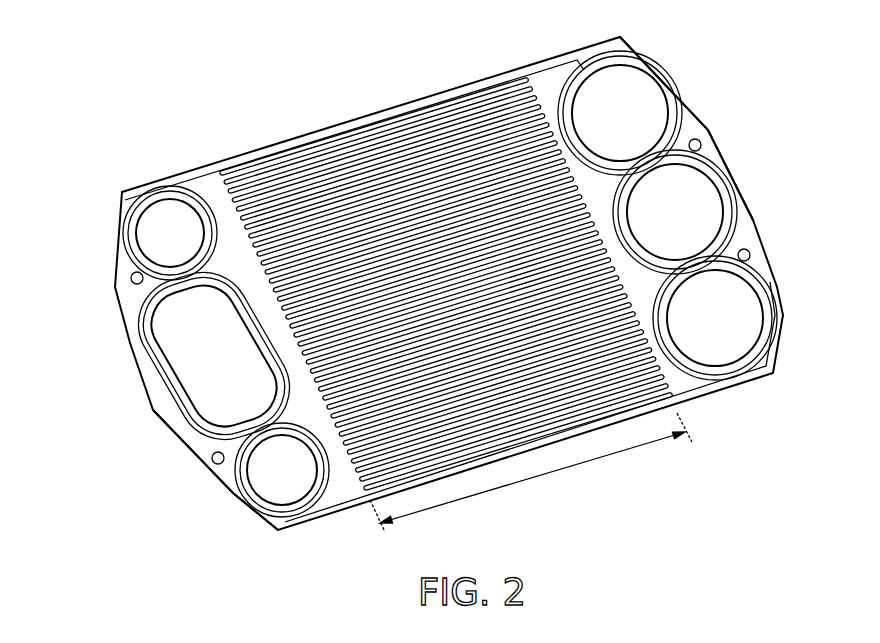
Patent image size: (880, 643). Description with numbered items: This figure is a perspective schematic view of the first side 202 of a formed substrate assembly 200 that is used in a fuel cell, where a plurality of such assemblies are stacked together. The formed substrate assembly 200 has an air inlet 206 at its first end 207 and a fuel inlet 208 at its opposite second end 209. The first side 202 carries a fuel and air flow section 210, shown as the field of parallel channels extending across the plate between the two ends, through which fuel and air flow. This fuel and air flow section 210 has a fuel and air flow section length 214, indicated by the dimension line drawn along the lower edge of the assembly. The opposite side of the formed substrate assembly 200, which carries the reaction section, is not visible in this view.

The formed substrate assembly 200 is at (236, 93).
The first side 202 is at (578, 58).
The air inlet 206 is at (186, 366).
The first end 207 is at (140, 520).
The fuel inlet 208 is at (700, 203).
The second end 209 is at (755, 72).
The fuel and air flow section 210 is at (381, 100).
The fuel and air flow section length 214 is at (534, 474).